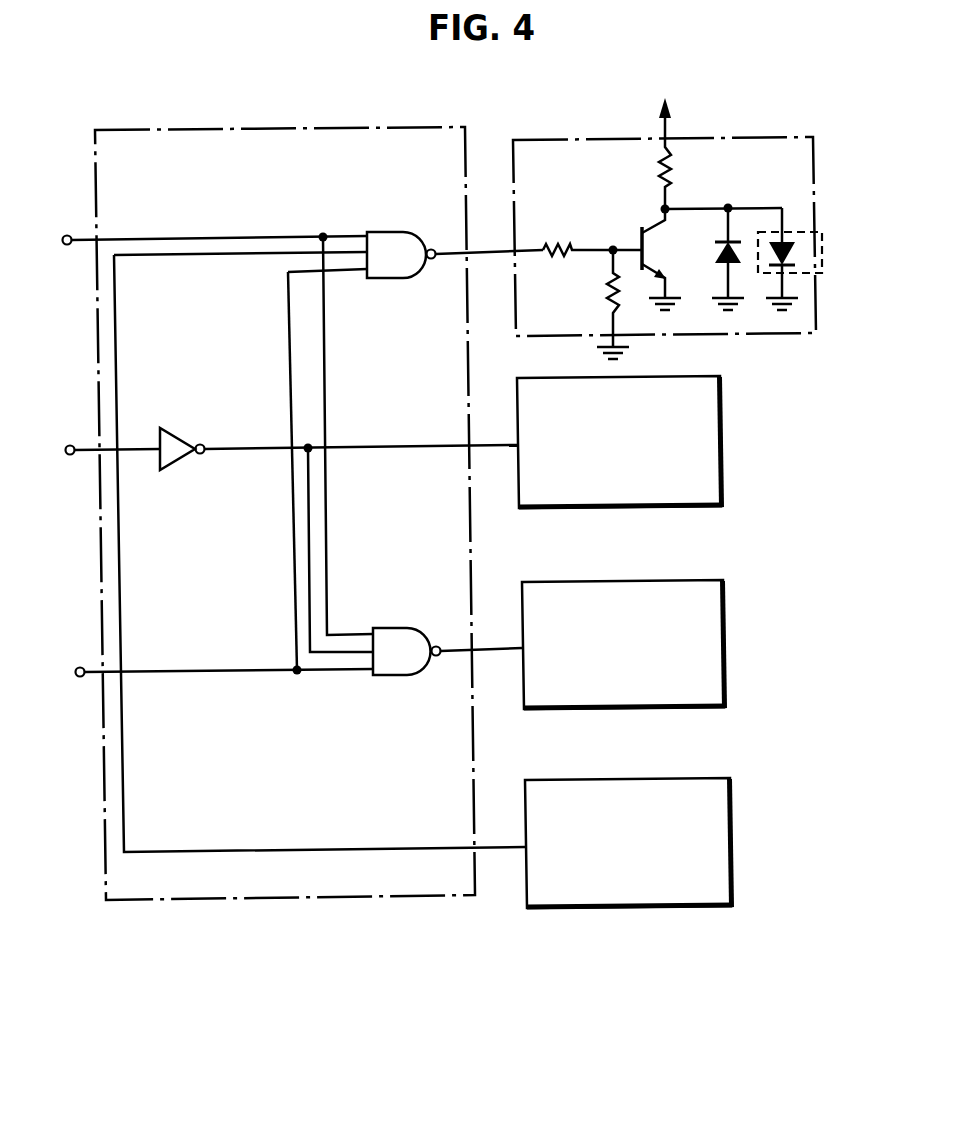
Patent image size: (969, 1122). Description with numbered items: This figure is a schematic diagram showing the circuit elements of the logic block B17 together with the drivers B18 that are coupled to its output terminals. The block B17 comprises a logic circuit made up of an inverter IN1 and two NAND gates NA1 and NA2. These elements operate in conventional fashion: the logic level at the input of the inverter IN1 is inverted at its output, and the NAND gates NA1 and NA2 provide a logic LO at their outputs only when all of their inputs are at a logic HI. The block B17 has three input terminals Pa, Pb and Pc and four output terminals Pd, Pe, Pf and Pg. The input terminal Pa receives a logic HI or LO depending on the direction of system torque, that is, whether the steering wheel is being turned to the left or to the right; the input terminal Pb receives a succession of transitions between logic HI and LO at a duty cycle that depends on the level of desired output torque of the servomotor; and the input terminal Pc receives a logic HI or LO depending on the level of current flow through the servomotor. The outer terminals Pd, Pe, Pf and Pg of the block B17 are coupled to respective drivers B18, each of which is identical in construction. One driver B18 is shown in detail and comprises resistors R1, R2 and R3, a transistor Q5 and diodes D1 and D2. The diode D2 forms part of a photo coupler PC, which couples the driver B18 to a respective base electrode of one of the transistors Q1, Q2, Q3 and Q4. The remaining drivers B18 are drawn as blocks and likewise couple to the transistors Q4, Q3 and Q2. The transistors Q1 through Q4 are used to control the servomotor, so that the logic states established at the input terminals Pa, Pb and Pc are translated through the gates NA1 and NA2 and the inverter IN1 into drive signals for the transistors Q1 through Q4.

The block B17 is at (264, 128).
The driver B18 is at (762, 138).
The NAND gate NA1 is at (390, 232).
The NAND gate NA2 is at (406, 628).
The inverter IN1 is at (182, 428).
The resistor R1 is at (571, 240).
The resistor R2 is at (657, 160).
The resistor R3 is at (609, 290).
The transistor Q5 is at (663, 258).
The diode D1 is at (726, 240).
The diode D2 is at (783, 232).
The photo coupler PC is at (802, 228).
The transistor Q1 is at (797, 250).
The transistor Q2 is at (738, 834).
The transistor Q3 is at (732, 640).
The transistor Q4 is at (733, 436).
The input terminal Pa is at (95, 449).
The input terminal Pb is at (201, 430).
The input terminal Pc is at (206, 671).
The output terminal Pd is at (490, 237).
The output terminal Pe is at (361, 532).
The output terminal Pf is at (482, 634).
The output terminal Pg is at (319, 553).